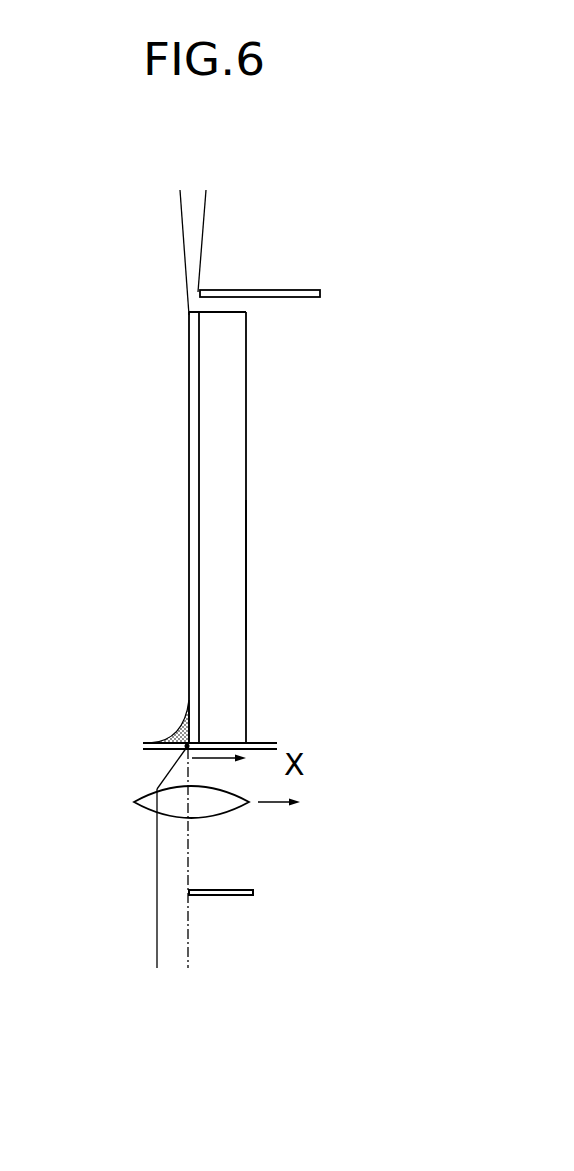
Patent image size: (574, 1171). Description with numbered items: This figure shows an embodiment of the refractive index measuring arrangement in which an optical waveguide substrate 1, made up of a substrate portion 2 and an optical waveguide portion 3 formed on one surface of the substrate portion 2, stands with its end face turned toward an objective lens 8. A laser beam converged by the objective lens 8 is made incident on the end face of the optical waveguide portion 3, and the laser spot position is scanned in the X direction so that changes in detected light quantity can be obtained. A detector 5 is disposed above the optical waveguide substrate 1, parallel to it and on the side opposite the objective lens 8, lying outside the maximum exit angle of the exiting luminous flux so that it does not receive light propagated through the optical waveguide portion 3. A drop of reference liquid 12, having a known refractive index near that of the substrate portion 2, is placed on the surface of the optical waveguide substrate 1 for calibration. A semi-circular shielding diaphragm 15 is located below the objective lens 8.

The optical waveguide substrate 1 is at (252, 580).
The substrate portion 2 is at (246, 415).
The optical waveguide portion 3 is at (189, 425).
The detector 5 is at (300, 290).
The objective lens 8 is at (134, 802).
The reference liquid 12 is at (176, 726).
The semi-circular shielding diaphragm 15 is at (253, 890).